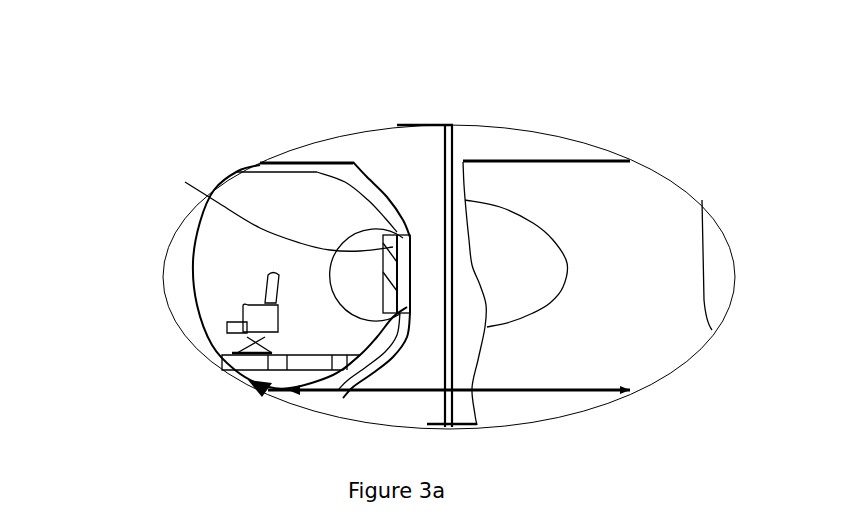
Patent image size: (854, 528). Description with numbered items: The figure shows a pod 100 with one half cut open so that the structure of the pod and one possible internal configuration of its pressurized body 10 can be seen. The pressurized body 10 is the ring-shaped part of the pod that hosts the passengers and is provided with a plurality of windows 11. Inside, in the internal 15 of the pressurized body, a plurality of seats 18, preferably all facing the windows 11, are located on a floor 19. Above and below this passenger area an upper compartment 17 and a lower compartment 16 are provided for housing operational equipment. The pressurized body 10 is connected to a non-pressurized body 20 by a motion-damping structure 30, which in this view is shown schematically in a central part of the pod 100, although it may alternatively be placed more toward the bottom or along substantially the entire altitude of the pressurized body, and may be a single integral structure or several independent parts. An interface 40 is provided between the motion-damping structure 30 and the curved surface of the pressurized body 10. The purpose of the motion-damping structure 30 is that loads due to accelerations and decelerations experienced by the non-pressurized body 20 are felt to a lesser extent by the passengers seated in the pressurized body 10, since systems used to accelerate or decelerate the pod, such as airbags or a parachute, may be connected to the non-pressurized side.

The pod 100 is at (606, 104).
The pressurized body 10 is at (638, 207).
The non-pressurized body 20 is at (410, 177).
The window 11 is at (177, 272).
The internal of the pressurized body 15 is at (217, 253).
The upper compartment 17 is at (258, 164).
The interface 40 is at (271, 206).
The motion-damping structure 30 is at (395, 312).
The seat 18 is at (200, 346).
The floor 19 is at (220, 357).
The lower compartment 16 is at (252, 390).